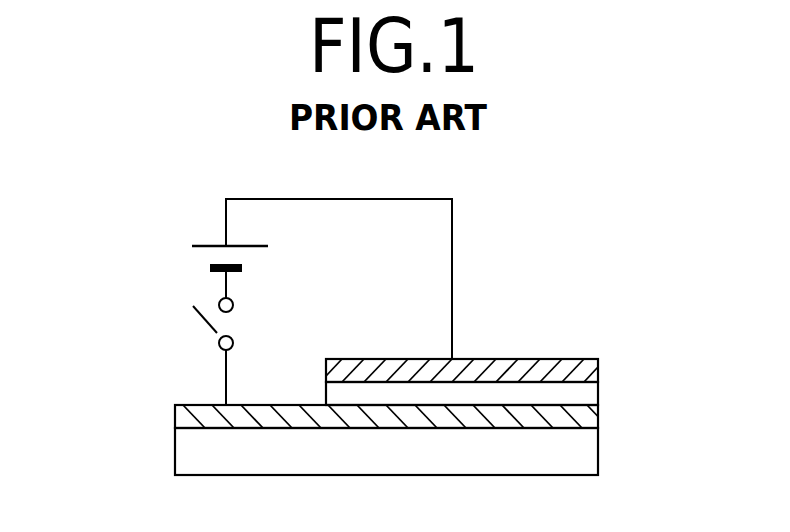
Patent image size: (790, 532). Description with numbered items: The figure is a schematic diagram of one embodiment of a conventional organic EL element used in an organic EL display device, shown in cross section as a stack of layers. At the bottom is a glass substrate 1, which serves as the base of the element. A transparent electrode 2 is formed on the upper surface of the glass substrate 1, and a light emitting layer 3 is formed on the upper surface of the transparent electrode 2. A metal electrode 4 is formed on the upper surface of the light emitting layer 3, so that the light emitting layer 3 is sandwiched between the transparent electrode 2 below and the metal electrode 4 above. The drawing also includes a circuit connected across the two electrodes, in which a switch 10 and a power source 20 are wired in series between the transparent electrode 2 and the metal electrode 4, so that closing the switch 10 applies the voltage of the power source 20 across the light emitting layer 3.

The glass substrate 1 is at (588, 445).
The transparent electrode 2 is at (592, 416).
The light emitting layer 3 is at (593, 390).
The upper electrode layer 4 is at (599, 361).
The switch 10 is at (198, 328).
The power source (battery) 20 is at (203, 266).